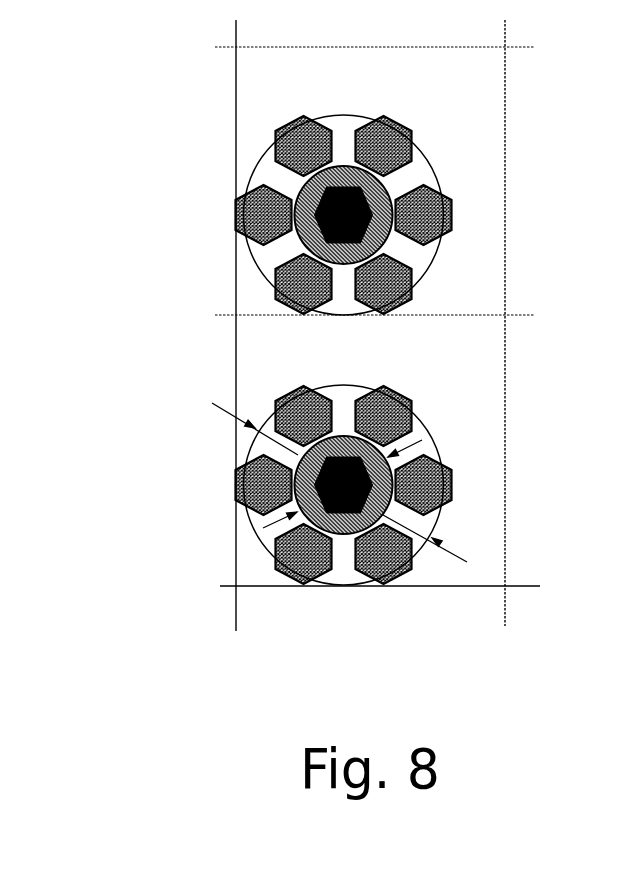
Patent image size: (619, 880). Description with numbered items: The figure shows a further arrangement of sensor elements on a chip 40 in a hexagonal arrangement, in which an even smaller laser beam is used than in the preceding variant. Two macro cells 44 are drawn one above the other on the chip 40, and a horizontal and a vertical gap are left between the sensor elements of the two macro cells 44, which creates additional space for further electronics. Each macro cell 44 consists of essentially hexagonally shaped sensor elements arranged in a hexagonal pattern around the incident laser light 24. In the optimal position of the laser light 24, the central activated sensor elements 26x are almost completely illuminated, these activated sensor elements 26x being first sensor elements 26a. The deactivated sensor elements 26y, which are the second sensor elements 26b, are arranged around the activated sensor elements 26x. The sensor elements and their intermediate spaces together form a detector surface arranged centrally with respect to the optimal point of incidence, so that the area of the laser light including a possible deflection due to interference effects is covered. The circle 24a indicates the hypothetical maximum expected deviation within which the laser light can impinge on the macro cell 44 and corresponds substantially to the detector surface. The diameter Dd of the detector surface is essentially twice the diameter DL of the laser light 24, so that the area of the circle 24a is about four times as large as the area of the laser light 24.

The macro cell 44 is at (316, 393).
The chip 40 is at (317, 502).
The activated sensor elements 26x is at (232, 485).
The first sensor elements 26a is at (293, 463).
The deactivated sensor elements 26y is at (249, 497).
The second sensor elements 26b is at (237, 502).
The circle of maximum expected deviation 24a is at (262, 543).
The laser light 24 is at (343, 525).
The diameter of the laser light DL is at (413, 448).
The diameter of the detector surface Dd is at (452, 547).